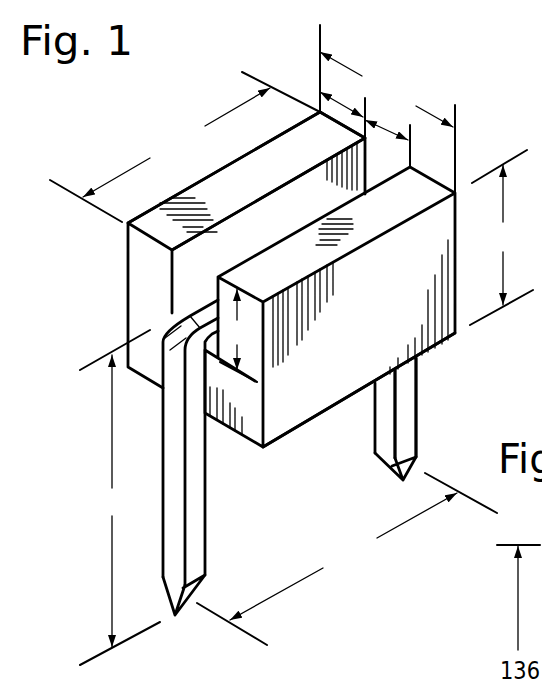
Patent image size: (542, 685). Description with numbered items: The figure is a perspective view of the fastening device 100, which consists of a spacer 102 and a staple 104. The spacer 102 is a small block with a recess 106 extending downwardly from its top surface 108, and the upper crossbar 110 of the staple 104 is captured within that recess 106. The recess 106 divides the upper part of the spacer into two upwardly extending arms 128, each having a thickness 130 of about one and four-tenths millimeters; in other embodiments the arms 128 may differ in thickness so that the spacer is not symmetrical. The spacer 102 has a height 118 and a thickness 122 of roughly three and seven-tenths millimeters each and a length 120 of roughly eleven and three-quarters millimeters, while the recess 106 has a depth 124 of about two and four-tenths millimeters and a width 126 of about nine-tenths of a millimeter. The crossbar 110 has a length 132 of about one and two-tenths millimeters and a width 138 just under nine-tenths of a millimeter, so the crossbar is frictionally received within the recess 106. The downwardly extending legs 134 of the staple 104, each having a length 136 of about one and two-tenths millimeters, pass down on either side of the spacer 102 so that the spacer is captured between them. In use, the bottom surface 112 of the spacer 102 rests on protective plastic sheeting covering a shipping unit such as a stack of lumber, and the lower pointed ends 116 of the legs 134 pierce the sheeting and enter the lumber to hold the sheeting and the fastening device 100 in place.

The fastening device 100 is at (460, 70).
The spacer 102 is at (457, 228).
The staple 104 is at (412, 402).
The recess 106 is at (219, 271).
The top surface 108 is at (245, 163).
The upper crossbar 110 is at (167, 312).
The bottom surface 112 is at (294, 431).
The pointed ends 116 is at (185, 598).
The height 118 is at (501, 237).
The length 120 is at (186, 147).
The thickness 122 is at (387, 109).
The depth 124 is at (240, 335).
The width 126 is at (385, 131).
The upwardly extending arms 128 is at (293, 260).
The thickness 130 is at (341, 106).
The length 132 is at (347, 559).
The downwardly extending legs 134 is at (412, 375).
The length 136 is at (120, 497).
The width 138 is at (204, 316).